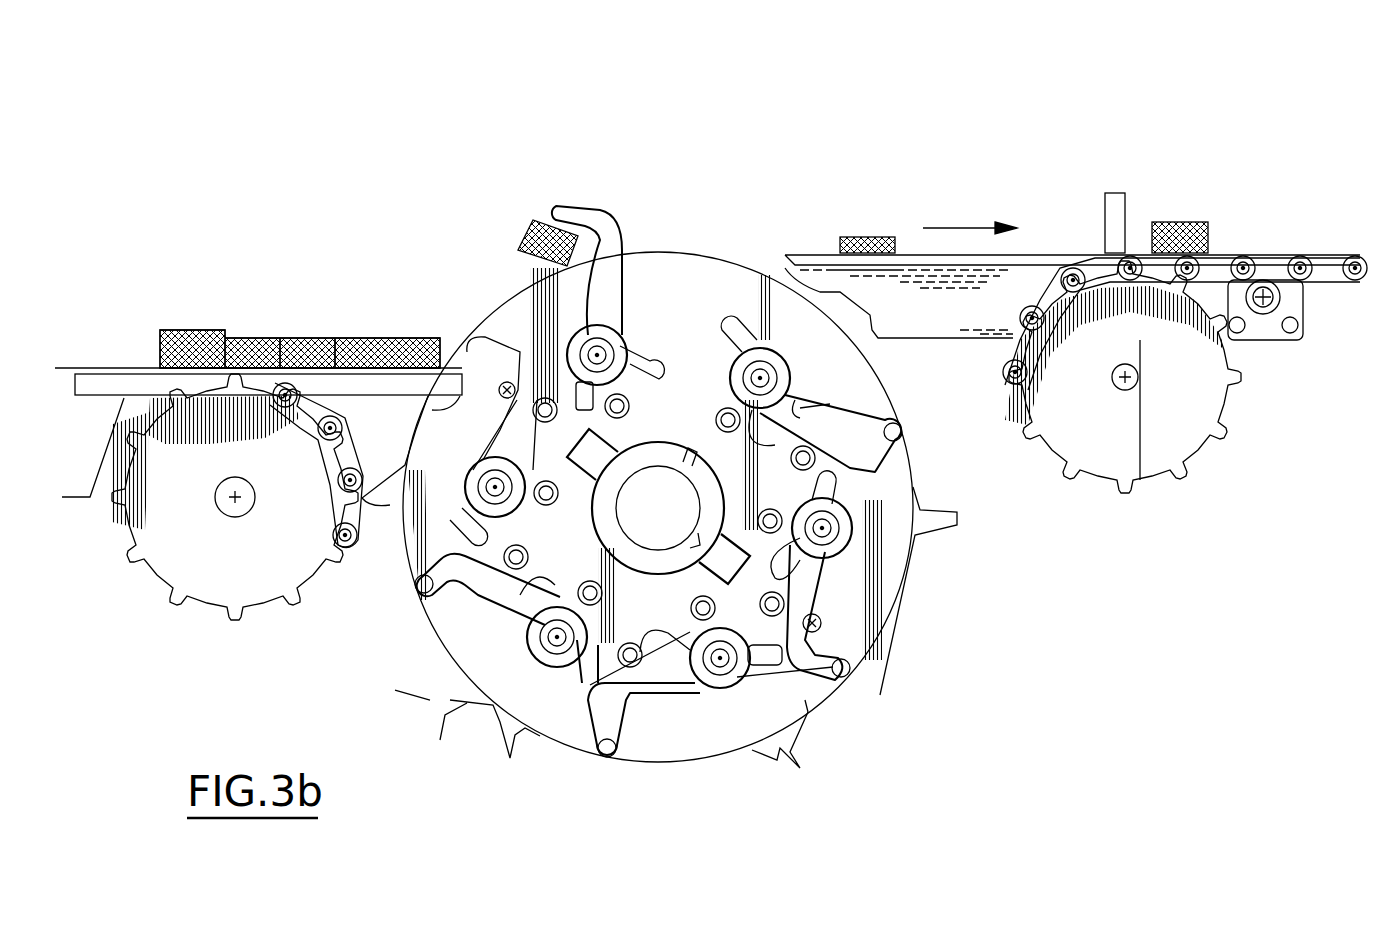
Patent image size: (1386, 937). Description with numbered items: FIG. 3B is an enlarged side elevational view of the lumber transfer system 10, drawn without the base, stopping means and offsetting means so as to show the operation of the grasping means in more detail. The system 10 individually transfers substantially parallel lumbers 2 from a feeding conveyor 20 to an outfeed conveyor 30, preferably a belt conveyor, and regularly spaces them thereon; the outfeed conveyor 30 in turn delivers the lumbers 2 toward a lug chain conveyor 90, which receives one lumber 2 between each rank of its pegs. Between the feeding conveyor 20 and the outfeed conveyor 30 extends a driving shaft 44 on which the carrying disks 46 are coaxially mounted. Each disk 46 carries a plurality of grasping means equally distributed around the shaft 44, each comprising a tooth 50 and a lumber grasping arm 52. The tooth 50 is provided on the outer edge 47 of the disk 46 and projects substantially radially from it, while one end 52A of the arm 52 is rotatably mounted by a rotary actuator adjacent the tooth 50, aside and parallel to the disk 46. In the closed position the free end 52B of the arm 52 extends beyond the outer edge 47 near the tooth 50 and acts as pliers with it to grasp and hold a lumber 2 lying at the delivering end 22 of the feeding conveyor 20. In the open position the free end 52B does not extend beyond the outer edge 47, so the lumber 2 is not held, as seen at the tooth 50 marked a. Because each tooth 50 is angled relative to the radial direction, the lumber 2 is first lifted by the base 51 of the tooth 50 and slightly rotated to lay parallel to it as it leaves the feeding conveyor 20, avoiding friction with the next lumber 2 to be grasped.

The lumbers 2 is at (290, 333).
The lumber transfer system 10 is at (562, 142).
The feeding conveyor 20 is at (190, 270).
The delivering end of the feeding conveyor 22 is at (432, 403).
The outfeed conveyor 30 is at (915, 182).
The lug chain conveyor 90 is at (1176, 182).
The driving shaft 44 is at (643, 520).
The carrying disks 46 is at (800, 715).
The outer edge of the disk 47 is at (870, 650).
The tooth 50 is at (518, 256).
The base of the tooth 51 is at (870, 563).
The lumber grasping arm 52 is at (830, 580).
The one end of the arm 52A is at (855, 537).
The free end of the arm 52B is at (822, 690).
The tooth marked a is at (825, 400).